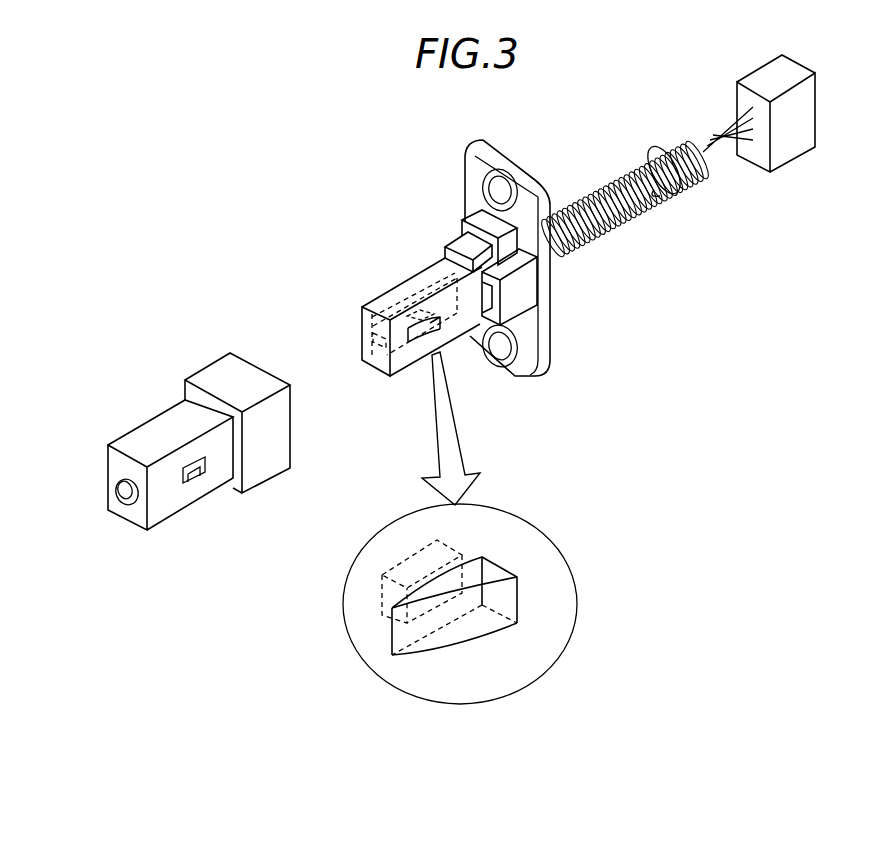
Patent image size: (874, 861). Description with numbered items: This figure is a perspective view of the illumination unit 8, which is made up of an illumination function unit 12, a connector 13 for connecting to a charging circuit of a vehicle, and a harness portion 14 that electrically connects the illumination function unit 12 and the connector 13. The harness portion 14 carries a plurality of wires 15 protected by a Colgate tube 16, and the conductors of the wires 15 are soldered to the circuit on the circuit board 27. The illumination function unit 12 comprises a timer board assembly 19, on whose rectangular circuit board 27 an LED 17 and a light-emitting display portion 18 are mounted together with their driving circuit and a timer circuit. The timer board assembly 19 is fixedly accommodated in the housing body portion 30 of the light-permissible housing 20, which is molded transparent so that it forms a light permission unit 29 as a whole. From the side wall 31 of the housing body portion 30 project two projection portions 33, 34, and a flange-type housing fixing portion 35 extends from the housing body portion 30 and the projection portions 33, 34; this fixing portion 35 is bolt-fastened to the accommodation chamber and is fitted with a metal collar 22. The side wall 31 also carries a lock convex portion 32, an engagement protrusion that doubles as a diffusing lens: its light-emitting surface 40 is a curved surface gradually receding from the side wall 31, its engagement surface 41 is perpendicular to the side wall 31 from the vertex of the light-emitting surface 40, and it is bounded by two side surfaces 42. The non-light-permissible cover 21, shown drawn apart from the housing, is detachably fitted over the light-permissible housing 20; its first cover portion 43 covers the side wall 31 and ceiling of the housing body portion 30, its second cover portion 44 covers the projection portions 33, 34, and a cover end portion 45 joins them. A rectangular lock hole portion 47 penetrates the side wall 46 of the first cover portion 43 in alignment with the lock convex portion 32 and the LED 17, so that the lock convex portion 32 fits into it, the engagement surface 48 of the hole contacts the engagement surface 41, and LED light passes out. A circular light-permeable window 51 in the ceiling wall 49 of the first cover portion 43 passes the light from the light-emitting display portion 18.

The illumination unit 8 is at (216, 151).
The illumination function unit 12 is at (246, 292).
The connector 13 is at (793, 150).
The harness portion 14 is at (616, 184).
The wires 15 is at (720, 128).
The Colgate tube 16 is at (696, 178).
The LED 17 is at (415, 562).
The light-emitting display portion 18 is at (387, 364).
The timer board assembly 19 is at (433, 276).
The light-permissible housing 20 is at (374, 294).
The non-light-permissible cover 21 is at (170, 417).
The collar 22 is at (496, 172).
The circuit board 27 is at (430, 266).
The light permission unit 29 is at (452, 333).
The housing body portion 30 is at (360, 328).
The side wall 31 is at (399, 356).
The lock convex portion 32 is at (432, 338).
The projection portion 33 is at (527, 290).
The projection portion 34 is at (475, 220).
The housing fixing portion 35 is at (470, 178).
The light-emitting surface 40 is at (480, 629).
The engagement surface 41 is at (505, 595).
The side surfaces 42 is at (473, 578).
The first cover portion 43 is at (180, 503).
The second cover portion 44 is at (275, 461).
The cover end portion 45 is at (238, 488).
The side wall 46 is at (152, 516).
The lock hole portion 47 is at (194, 481).
The engagement surface 48 is at (207, 466).
The ceiling wall 49 is at (113, 458).
The light-permeable window 51 is at (117, 494).